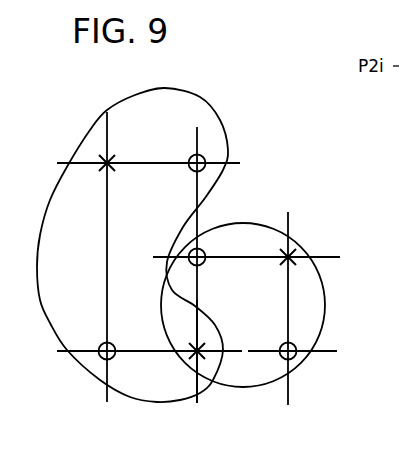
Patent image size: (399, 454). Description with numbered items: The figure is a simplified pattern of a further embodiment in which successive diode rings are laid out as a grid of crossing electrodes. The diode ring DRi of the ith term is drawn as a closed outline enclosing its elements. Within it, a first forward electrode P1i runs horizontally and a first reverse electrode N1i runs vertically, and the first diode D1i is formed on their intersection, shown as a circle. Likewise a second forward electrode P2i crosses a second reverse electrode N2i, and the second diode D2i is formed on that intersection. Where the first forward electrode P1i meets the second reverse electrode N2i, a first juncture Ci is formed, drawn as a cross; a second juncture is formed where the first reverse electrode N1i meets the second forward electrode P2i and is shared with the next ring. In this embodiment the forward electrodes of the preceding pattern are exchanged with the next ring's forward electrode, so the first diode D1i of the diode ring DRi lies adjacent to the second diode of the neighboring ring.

The diode ring DRi is at (152, 403).
The second reverse electrode N2i is at (99, 247).
The first reverse electrode N1i is at (189, 254).
The first forward electrode P1i is at (164, 165).
The second forward electrode P2i is at (132, 350).
The first juncture Ci is at (111, 167).
The first diode D1i is at (190, 170).
The second diode D2i is at (113, 345).